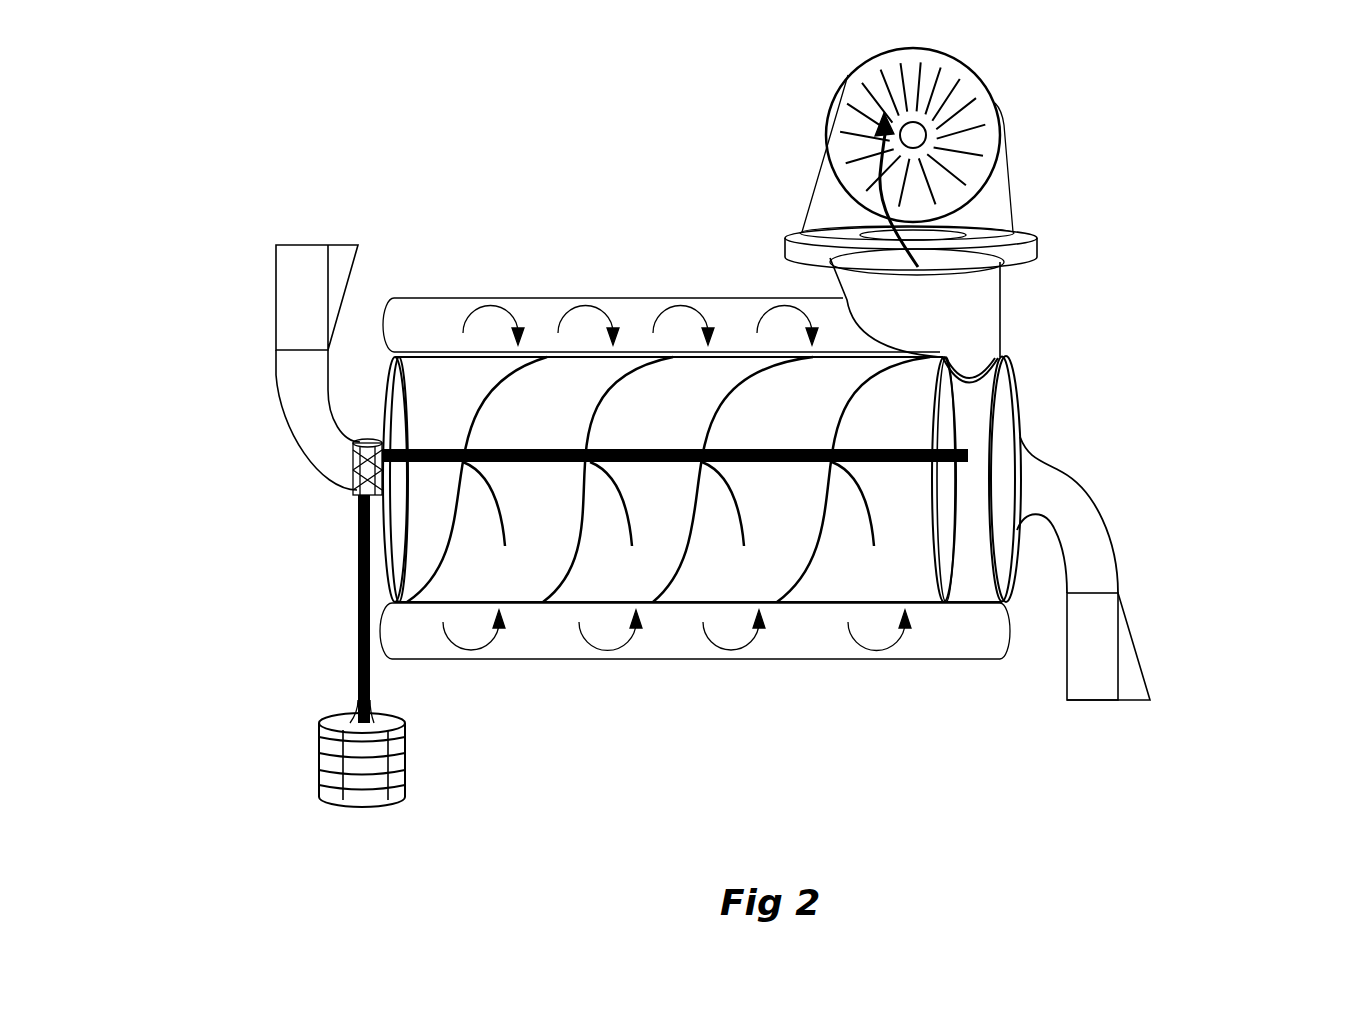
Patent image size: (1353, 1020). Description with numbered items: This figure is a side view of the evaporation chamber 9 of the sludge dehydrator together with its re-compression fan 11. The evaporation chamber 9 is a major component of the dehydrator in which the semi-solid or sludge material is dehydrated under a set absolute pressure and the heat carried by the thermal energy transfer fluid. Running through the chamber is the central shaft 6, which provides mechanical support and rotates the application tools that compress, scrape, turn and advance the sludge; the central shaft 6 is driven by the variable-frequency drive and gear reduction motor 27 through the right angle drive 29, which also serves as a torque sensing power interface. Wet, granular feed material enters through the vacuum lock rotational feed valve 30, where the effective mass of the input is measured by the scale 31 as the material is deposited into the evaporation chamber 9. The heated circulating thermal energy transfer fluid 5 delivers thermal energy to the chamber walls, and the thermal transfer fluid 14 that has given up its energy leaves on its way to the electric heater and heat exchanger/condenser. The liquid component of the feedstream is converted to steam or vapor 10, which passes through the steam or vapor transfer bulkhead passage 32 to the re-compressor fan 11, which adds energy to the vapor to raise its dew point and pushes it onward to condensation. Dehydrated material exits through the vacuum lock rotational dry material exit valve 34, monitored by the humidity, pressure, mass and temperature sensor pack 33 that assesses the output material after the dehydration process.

The circulating thermal energy transfer fluid 5 is at (737, 662).
The central shaft 6 is at (557, 462).
The evaporation chamber 9 is at (587, 385).
The steam or vapor 10 is at (1035, 238).
The re-compressor fan 11 is at (1003, 100).
The thermal transfer fluid 14 is at (503, 290).
The variable-frequency drive and gear reduction motor 27 is at (313, 752).
The right angle drive 29 is at (343, 475).
The wet material feed valve 30 is at (273, 280).
The scale 31 is at (272, 333).
The steam or vapor transfer bulkhead passage 32 is at (1017, 380).
The sensor pack 33 is at (1123, 625).
The dry material exit valve 34 is at (1052, 652).